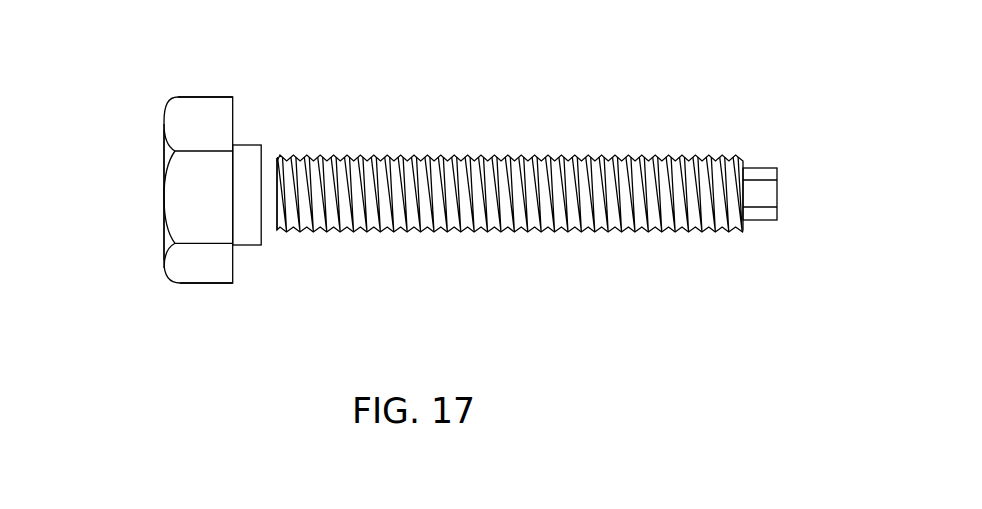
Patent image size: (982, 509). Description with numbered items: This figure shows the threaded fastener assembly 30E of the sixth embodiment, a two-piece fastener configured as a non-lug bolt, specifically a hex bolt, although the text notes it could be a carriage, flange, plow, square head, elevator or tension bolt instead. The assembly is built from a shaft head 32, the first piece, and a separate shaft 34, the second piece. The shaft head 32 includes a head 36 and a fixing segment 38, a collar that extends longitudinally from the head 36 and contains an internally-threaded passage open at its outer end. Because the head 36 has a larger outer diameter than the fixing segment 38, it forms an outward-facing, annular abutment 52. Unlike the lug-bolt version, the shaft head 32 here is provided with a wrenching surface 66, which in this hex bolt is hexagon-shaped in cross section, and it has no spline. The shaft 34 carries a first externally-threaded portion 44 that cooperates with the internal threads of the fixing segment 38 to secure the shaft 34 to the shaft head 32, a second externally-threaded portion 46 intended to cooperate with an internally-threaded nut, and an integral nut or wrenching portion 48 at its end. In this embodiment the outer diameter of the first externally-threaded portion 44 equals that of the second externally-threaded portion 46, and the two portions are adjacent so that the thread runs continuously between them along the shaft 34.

The threaded fastener assembly 30E is at (752, 120).
The shaft head 32 is at (205, 97).
The shaft 34 is at (581, 158).
The head 36 is at (163, 213).
The fixing segment 38 is at (242, 245).
The first externally-threaded portion 44 is at (313, 232).
The second externally-threaded portion 46 is at (610, 233).
The wrenching portion 48 is at (757, 222).
The abutment 52 is at (237, 113).
The wrenching surface 66 is at (183, 285).